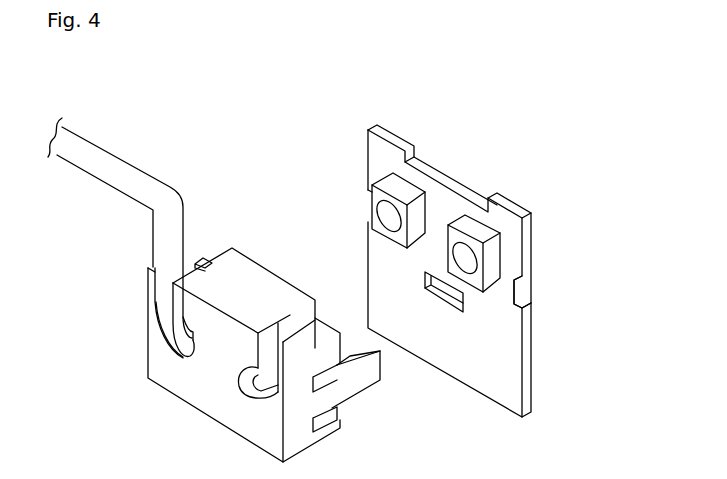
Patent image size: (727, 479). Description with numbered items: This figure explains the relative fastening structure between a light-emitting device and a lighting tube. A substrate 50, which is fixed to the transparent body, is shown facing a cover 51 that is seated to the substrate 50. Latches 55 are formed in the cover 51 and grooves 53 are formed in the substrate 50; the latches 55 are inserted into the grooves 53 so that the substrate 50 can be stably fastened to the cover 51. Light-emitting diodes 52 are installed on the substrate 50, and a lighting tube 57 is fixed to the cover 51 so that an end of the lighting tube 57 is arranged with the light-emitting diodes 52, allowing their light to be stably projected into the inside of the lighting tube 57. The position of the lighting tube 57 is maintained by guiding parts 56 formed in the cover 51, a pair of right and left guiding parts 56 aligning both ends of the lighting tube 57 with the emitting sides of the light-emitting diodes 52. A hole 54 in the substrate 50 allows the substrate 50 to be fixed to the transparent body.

The substrate 50 is at (451, 256).
The cover 51 is at (257, 248).
The light-emitting diodes 52 is at (385, 210).
The grooves 53 is at (531, 296).
The hole 54 is at (448, 298).
The latches 55 is at (375, 380).
The guiding parts 56 is at (253, 388).
The lighting tube 57 is at (107, 167).